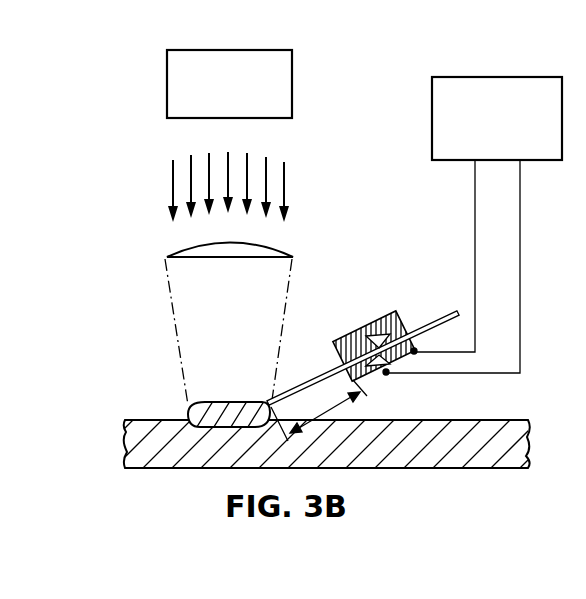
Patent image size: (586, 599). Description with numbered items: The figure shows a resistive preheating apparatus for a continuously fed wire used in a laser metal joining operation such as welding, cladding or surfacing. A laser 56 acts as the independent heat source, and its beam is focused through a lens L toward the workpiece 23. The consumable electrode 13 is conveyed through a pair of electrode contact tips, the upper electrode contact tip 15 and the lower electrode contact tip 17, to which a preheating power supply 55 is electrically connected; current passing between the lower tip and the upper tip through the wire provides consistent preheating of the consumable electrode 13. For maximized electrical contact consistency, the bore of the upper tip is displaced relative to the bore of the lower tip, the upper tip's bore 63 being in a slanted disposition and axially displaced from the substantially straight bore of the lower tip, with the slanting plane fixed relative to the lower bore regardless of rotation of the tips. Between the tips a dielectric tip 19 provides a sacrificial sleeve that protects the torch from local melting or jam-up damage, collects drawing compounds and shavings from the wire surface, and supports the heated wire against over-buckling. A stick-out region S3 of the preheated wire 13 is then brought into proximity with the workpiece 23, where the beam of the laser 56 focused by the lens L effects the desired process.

The laser 56 is at (260, 50).
The preheating power supply 55 is at (510, 77).
The lens L is at (176, 256).
The workpiece 23 is at (515, 430).
The lower electrode contact tip 17 is at (360, 333).
The upper electrode contact tip 15 is at (389, 314).
The consumable electrode 13 is at (437, 322).
The upper tip's bore 63 is at (405, 331).
The dielectric tip 19 is at (392, 362).
The stick-out region S3 is at (364, 397).